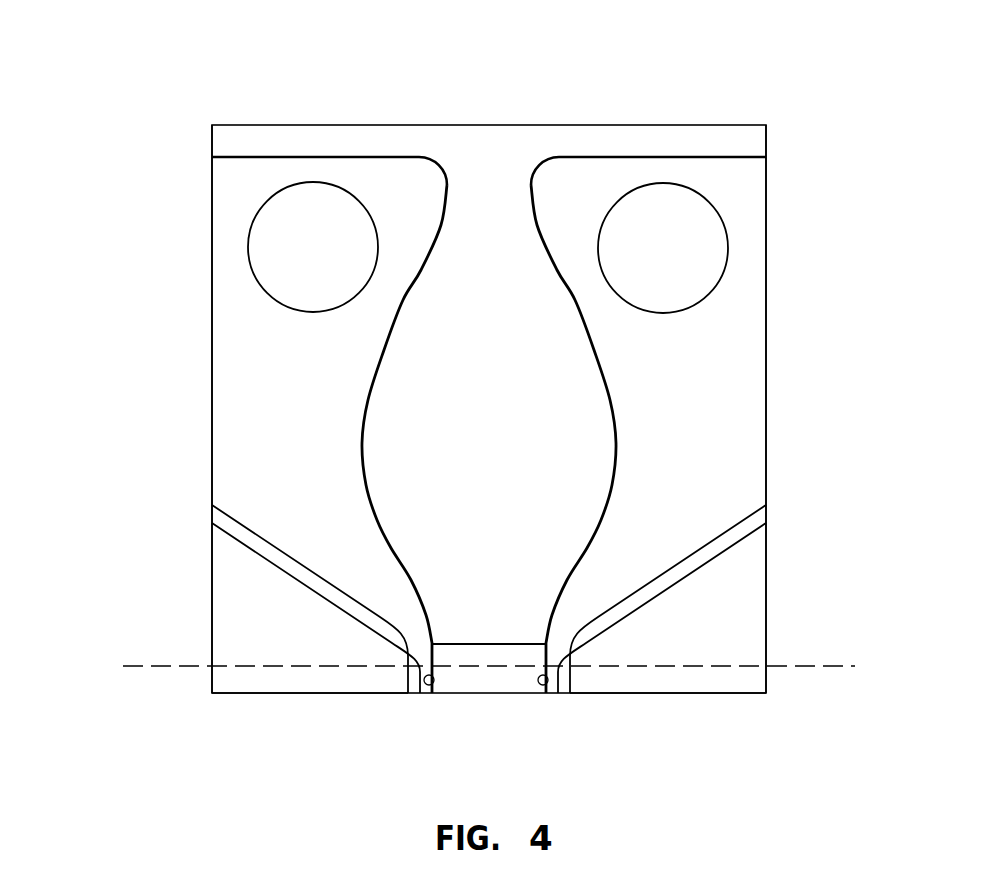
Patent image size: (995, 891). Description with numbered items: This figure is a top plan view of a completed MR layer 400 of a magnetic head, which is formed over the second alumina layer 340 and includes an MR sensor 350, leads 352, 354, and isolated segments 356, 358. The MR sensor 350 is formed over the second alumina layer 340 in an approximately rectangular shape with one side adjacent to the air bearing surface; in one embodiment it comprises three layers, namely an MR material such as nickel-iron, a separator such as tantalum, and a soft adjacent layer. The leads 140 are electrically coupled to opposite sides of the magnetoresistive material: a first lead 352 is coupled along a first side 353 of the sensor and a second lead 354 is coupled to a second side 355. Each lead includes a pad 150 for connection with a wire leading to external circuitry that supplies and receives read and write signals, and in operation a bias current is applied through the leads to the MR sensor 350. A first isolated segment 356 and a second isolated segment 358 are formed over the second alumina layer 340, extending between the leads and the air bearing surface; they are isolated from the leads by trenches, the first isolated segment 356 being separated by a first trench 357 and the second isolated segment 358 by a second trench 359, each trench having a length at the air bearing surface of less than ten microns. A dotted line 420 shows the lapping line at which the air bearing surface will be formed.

The MR layer 400 is at (253, 93).
The second alumina layer 340 is at (488, 148).
The pad 150 is at (290, 258).
The leads 140 is at (211, 383).
The second trench 359 is at (278, 552).
The first trench 357 is at (700, 557).
The second isolated segment 358 is at (226, 584).
The first isolated segment 356 is at (750, 585).
The second lead 354 is at (422, 637).
The first lead 352 is at (553, 640).
The MR sensor 350 is at (491, 650).
The dotted line 420 is at (147, 665).
The second side 355 is at (435, 693).
The first side 353 is at (540, 693).